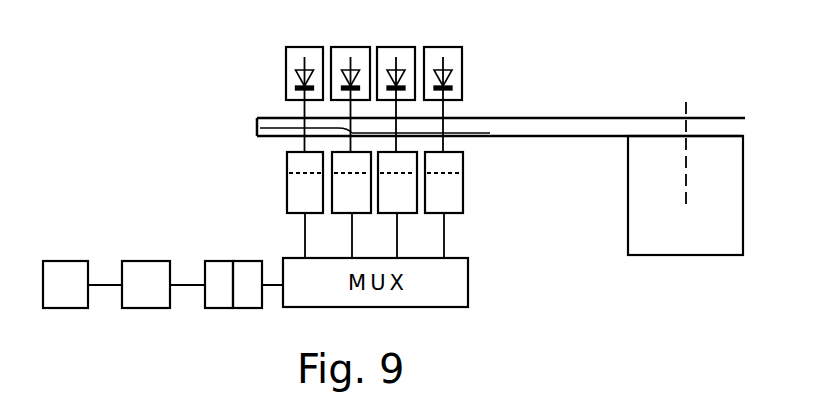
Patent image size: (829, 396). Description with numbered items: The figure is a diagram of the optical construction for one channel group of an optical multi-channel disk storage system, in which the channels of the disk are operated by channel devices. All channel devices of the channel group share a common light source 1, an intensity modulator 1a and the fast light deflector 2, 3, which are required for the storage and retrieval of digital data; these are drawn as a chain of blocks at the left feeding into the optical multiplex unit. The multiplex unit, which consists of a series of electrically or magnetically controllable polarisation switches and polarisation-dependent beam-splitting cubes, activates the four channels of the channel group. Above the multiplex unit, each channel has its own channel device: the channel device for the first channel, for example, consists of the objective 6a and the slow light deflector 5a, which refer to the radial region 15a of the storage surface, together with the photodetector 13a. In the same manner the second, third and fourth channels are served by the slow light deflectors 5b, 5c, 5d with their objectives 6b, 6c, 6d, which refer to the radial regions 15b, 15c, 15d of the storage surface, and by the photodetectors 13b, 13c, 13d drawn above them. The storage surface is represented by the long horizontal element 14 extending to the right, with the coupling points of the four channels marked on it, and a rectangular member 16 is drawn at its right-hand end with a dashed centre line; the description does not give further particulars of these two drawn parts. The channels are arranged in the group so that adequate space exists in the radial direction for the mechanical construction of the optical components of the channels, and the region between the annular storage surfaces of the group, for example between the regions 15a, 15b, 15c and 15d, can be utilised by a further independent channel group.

The light source 1 is at (65, 284).
The intensity modulator 1a is at (146, 284).
The fast light deflector 2 is at (219, 284).
The fast light deflector 3 is at (247, 284).
The slow light deflector 5a is at (305, 182).
The slow light deflector 5b is at (351, 182).
The slow light deflector 5c is at (397, 182).
The slow light deflector 5d is at (444, 182).
The objective 6a is at (305, 165).
The objective 6b is at (351, 165).
The objective 6c is at (397, 165).
The objective 6d is at (444, 165).
The photodetector 13a is at (305, 46).
The photodetector 13b is at (351, 46).
The photodetector 13c is at (396, 46).
The photodetector 13d is at (443, 46).
The light guide 14 is at (601, 128).
The radial region of the storage surface 15a is at (278, 138).
The radial region of the storage surface 15b is at (258, 128).
The radial region of the storage surface 15c is at (456, 118).
The radial region of the storage surface 15d is at (448, 137).
The detector 16 is at (666, 240).